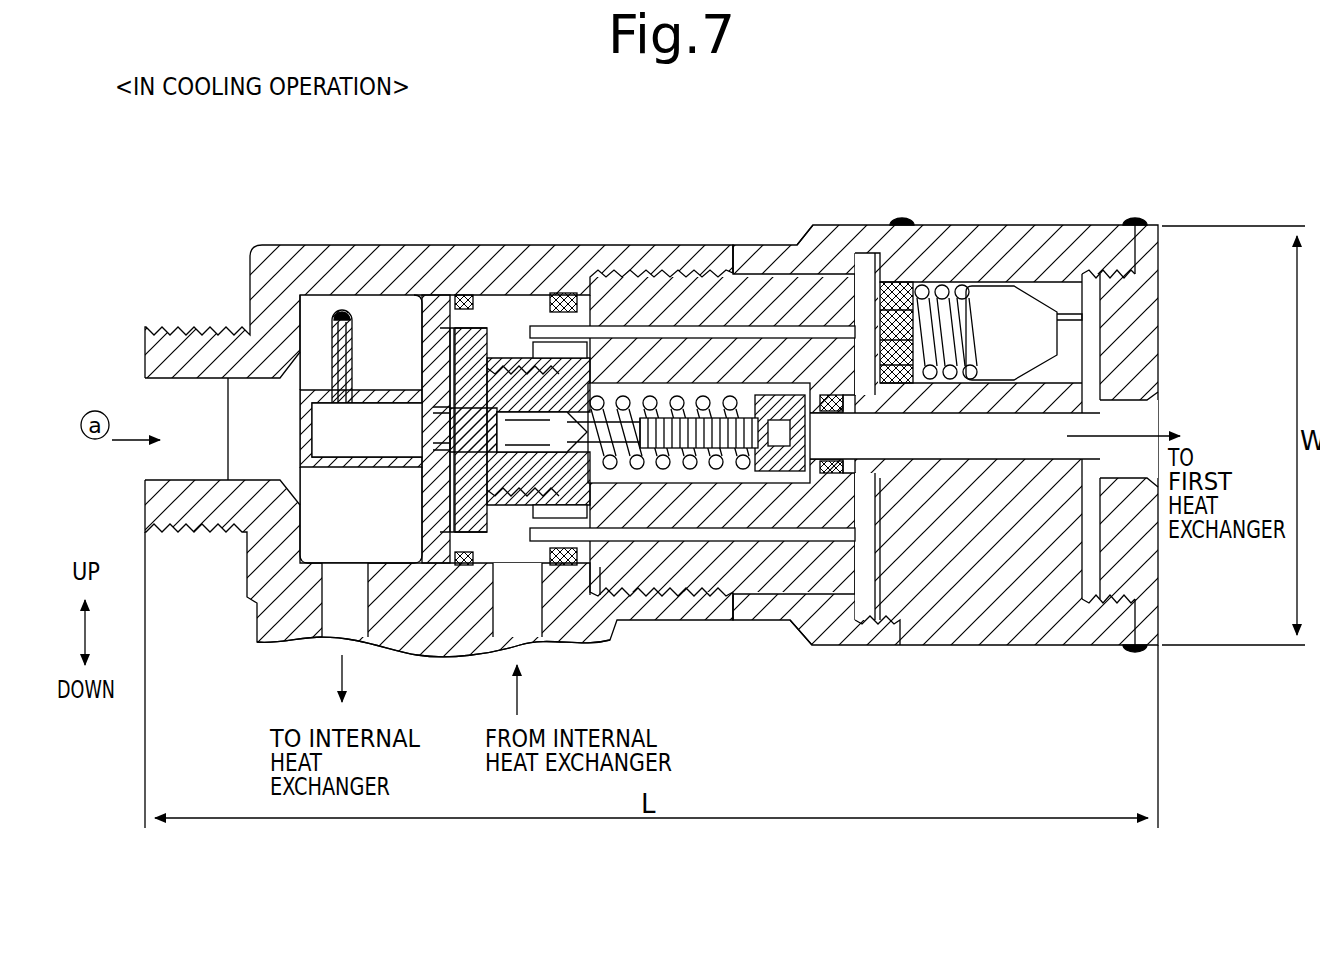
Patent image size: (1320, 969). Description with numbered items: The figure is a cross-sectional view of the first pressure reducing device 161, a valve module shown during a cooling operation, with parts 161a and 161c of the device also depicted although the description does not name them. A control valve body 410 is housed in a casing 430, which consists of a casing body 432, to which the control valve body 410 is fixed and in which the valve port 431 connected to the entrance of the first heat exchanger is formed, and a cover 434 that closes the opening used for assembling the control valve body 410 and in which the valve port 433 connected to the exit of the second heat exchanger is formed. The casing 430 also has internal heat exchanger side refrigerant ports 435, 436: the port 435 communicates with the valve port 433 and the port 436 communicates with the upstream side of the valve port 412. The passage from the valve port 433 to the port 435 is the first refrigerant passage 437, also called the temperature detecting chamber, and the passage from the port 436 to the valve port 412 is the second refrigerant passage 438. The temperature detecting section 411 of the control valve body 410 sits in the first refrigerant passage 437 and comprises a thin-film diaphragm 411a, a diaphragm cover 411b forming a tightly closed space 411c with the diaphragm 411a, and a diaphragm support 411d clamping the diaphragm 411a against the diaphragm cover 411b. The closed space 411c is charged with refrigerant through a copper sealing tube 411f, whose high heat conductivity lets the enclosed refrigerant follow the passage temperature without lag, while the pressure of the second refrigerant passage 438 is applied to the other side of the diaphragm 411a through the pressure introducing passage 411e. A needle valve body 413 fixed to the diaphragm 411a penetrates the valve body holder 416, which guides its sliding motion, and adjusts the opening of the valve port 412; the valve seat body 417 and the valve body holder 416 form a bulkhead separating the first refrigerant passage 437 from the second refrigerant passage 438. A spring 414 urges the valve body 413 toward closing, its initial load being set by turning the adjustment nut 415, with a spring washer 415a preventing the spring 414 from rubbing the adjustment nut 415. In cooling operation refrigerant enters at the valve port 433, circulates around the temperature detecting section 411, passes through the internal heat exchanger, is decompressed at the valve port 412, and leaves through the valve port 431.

The first pressure reducing device 161 is at (1096, 206).
The O-ring 161a is at (596, 244).
The check valve 161c is at (1010, 300).
The control valve body 410 is at (377, 374).
The temperature detecting section 411 is at (300, 340).
The diaphragm 411a is at (400, 300).
The diaphragm cover 411b is at (453, 300).
The tightly closed space 411c is at (337, 440).
The diaphragm support 411d is at (508, 318).
The pressure introducing passage 411e is at (404, 570).
The sealing tube 411f is at (330, 336).
The valve port 412 is at (560, 400).
The needle valve body 413 is at (463, 610).
The spring 414 is at (705, 470).
The adjustment nut 415 is at (782, 472).
The spring washer 415a is at (760, 450).
The valve body holder 416 is at (530, 330).
The valve seat body 417 is at (688, 245).
The casing 430 is at (233, 241).
The valve port 431 is at (856, 440).
The casing body 432 is at (778, 245).
The valve port 433 is at (165, 415).
The cover 434 is at (352, 312).
The internal heat exchanger side refrigerant port 435 is at (333, 600).
The internal heat exchanger side refrigerant port 436 is at (532, 613).
The first refrigerant passage 437 is at (337, 520).
The second refrigerant passage 438 is at (597, 622).